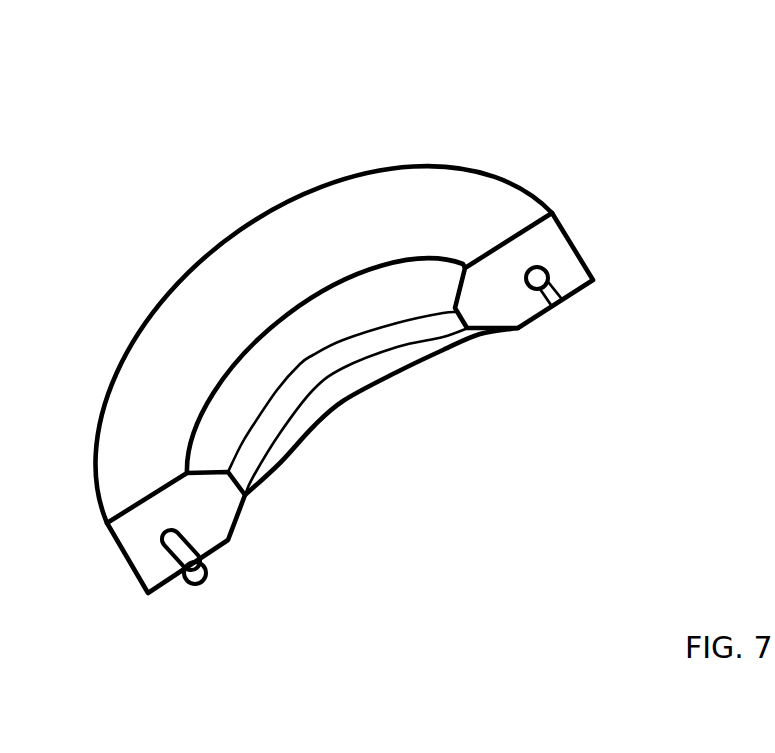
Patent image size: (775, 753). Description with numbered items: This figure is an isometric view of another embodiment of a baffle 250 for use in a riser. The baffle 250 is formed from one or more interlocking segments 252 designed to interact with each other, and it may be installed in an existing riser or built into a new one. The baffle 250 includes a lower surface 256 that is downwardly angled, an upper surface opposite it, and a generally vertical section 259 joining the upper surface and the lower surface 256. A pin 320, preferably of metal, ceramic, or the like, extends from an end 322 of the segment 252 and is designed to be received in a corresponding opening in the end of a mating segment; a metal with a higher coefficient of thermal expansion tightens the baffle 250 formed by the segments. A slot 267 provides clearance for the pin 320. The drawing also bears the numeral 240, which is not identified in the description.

The baffle 250 is at (628, 113).
The interlocking segment 252 is at (291, 237).
The curved band body 240 is at (232, 425).
The lower surface 256 is at (290, 447).
The vertical section 259 is at (357, 347).
The slot 267 is at (553, 297).
The pin 320 is at (189, 559).
The end of segment 322 is at (130, 538).